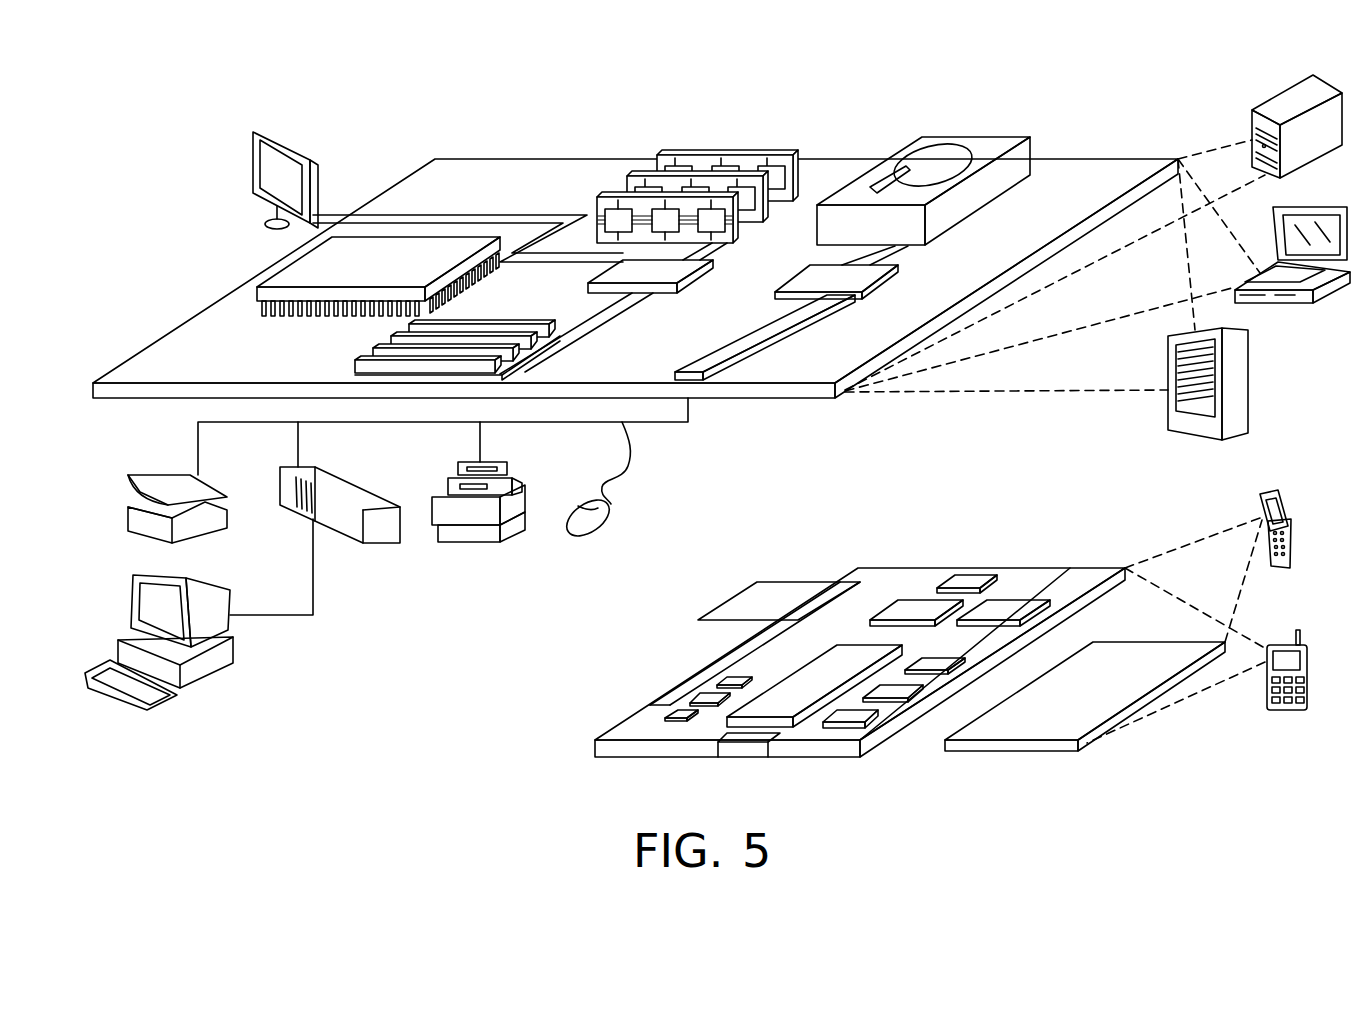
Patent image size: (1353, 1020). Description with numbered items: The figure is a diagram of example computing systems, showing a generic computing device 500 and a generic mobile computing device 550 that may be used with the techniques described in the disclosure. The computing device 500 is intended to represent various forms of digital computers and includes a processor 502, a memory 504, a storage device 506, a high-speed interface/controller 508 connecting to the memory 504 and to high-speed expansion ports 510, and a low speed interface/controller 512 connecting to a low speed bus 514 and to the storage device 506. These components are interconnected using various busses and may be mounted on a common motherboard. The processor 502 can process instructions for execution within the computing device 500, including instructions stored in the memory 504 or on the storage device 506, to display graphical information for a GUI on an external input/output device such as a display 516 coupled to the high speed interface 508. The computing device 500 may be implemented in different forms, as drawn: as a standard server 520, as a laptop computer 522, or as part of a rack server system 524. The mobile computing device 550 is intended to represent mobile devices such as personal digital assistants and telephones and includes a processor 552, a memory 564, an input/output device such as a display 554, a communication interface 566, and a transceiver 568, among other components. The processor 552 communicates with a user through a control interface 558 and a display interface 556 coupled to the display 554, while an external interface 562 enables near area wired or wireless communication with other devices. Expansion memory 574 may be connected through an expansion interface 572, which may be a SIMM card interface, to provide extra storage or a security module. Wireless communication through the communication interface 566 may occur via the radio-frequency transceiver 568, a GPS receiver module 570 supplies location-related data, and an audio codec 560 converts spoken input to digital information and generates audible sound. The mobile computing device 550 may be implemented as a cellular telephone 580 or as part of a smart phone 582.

The computing device 500 is at (383, 104).
The processor 502 is at (283, 262).
The memory 504 is at (730, 155).
The storage device 506 is at (963, 135).
The high-speed interface/controller 508 is at (667, 268).
The high-speed expansion ports 510 is at (385, 340).
The low speed interface/controller 512 is at (808, 272).
The low speed bus 514 is at (698, 370).
The display 516 is at (255, 128).
The standard server 520 is at (1273, 103).
The laptop computer 522 is at (1328, 207).
The rack server system 524 is at (1250, 383).
The mobile computing device 550 is at (548, 769).
The processor 552 is at (783, 690).
The display 554 is at (1125, 658).
The display interface 556 is at (860, 715).
The control interface 558 is at (900, 688).
The audio codec 560 is at (928, 657).
The external interface 562 is at (743, 744).
The memory 564 is at (700, 692).
The communication interface 566 is at (917, 602).
The transceiver 568 is at (1010, 600).
The GPS receiver module 570 is at (968, 577).
The expansion interface 572 is at (840, 582).
The expansion memory 574 is at (758, 580).
The cellular telephone 580 is at (1270, 487).
The smart phone 582 is at (1283, 643).